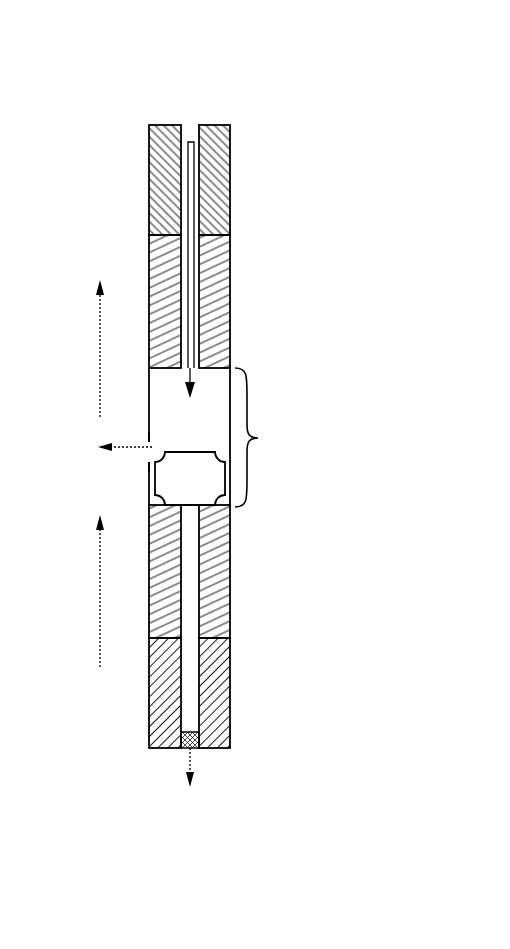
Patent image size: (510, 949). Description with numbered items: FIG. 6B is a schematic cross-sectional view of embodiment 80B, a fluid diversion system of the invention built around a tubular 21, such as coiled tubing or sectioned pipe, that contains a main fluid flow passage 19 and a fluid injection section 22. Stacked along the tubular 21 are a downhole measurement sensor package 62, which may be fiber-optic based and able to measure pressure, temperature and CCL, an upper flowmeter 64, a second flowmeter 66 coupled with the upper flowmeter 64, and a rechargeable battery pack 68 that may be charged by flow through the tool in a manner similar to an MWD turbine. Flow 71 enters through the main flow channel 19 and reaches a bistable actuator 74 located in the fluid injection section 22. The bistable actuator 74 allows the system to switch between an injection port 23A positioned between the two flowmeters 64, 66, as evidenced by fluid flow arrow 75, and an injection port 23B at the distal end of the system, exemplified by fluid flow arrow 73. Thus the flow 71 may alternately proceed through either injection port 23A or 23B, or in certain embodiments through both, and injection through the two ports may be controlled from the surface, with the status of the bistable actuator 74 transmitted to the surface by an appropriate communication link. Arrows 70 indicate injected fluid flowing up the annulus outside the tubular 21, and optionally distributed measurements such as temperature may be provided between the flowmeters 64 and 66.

The embodiment 80B is at (280, 62).
The main fluid flow passage 19 is at (195, 128).
The tubular 21 is at (230, 157).
The fluid injection section 22 is at (258, 438).
The injection port 23A is at (148, 463).
The injection port 23B is at (197, 750).
The downhole measurement sensor package 62 is at (218, 207).
The flowmeter 64 is at (213, 305).
The flowmeter 66 is at (212, 585).
The rechargeable battery pack 68 is at (215, 695).
The arrow 70 is at (100, 355).
The flow 71 is at (187, 153).
The fluid flow arrow 73 is at (188, 762).
The bistable actuator 74 is at (167, 478).
The fluid flow arrow 75 is at (125, 446).